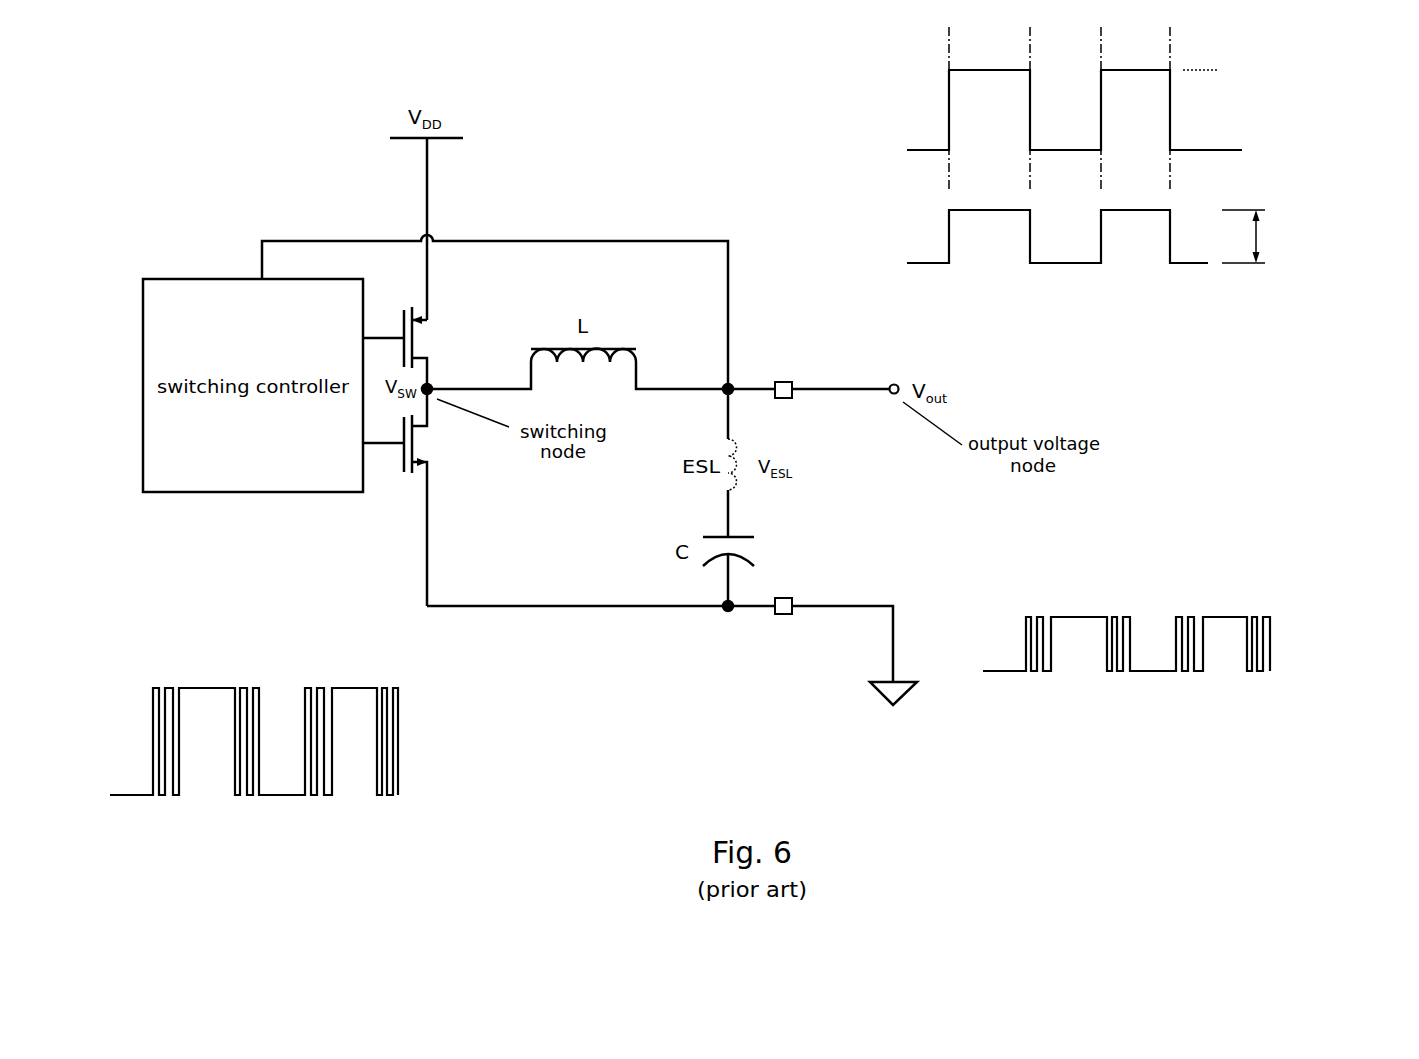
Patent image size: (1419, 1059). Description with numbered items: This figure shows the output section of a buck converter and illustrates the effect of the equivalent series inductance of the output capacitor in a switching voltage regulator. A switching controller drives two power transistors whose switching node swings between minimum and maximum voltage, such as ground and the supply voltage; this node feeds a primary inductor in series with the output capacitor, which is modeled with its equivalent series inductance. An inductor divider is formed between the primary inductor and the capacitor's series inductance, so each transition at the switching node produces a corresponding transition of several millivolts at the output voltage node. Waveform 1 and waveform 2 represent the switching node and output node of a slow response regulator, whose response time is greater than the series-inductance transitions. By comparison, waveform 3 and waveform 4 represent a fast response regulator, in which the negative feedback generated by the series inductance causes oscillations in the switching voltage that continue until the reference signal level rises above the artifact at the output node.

The waveform 1 is at (430, 384).
The waveform 2 is at (943, 283).
The waveform 3 is at (428, 703).
The waveform 4 is at (857, 405).